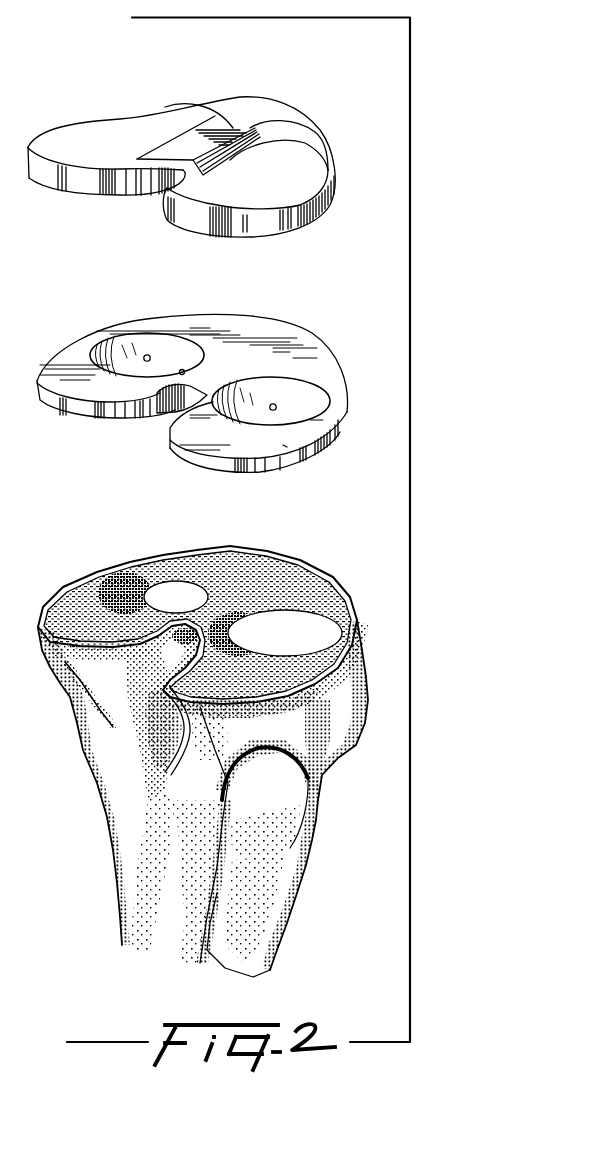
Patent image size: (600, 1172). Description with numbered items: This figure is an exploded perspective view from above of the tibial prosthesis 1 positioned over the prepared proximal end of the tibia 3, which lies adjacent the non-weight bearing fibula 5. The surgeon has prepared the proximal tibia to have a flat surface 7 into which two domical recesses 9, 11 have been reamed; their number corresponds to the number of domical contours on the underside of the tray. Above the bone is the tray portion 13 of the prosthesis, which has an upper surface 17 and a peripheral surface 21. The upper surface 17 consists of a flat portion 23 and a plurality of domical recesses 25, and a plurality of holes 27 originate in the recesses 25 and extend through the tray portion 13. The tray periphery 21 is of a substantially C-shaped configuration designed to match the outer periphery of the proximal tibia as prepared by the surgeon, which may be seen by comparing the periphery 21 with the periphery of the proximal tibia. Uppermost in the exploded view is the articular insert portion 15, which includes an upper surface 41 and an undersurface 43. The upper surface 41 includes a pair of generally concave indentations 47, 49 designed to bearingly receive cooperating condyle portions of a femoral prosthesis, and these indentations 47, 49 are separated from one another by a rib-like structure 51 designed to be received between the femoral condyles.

The tibial prosthesis 1 is at (338, 106).
The tibia 3 is at (118, 800).
The fibula 5 is at (277, 910).
The flat surface 7 is at (240, 590).
The domical recess 9 is at (145, 582).
The domical recess 11 is at (290, 633).
The tray portion 13 is at (296, 332).
The articular insert portion 15 is at (336, 183).
The upper surface 17 is at (224, 351).
The peripheral surface 21 is at (203, 462).
The flat portion 23 is at (283, 445).
The domical recesses 25 is at (168, 353).
The holes 27 is at (110, 373).
The upper surface 41 is at (163, 123).
The undersurface 43 is at (82, 195).
The concave indentation 47 is at (267, 187).
The concave indentation 49 is at (62, 147).
The rib-like structure 51 is at (232, 131).